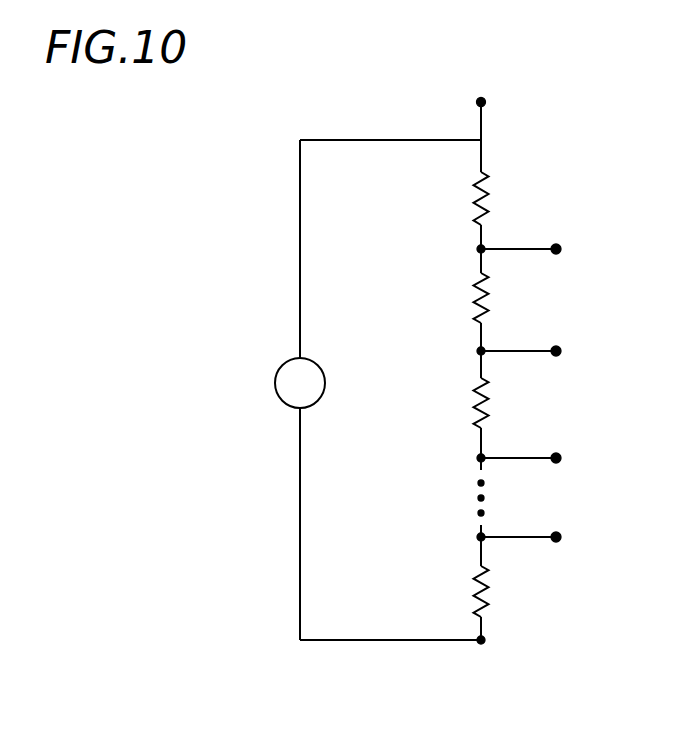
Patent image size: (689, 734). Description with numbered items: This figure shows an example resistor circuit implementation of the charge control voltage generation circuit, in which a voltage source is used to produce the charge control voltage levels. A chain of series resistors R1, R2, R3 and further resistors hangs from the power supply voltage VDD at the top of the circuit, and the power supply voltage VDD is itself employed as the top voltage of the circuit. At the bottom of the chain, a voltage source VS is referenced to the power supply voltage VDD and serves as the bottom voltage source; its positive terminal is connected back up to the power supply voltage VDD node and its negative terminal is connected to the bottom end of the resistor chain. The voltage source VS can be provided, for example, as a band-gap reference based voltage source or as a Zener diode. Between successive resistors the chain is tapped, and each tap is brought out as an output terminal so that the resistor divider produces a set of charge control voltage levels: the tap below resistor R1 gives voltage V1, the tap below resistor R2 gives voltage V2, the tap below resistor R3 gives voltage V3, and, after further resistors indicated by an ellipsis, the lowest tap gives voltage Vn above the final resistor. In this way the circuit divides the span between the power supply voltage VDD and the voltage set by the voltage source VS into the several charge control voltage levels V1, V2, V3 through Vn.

The voltage source VS is at (278, 383).
The power supply voltage VDD is at (496, 88).
The resistor R1 is at (457, 198).
The resistor R2 is at (457, 298).
The resistor R3 is at (457, 403).
The charge control voltage level V1 is at (534, 254).
The charge control voltage level V2 is at (534, 356).
The charge control voltage level V3 is at (534, 463).
The charge control voltage level Vn is at (534, 541).